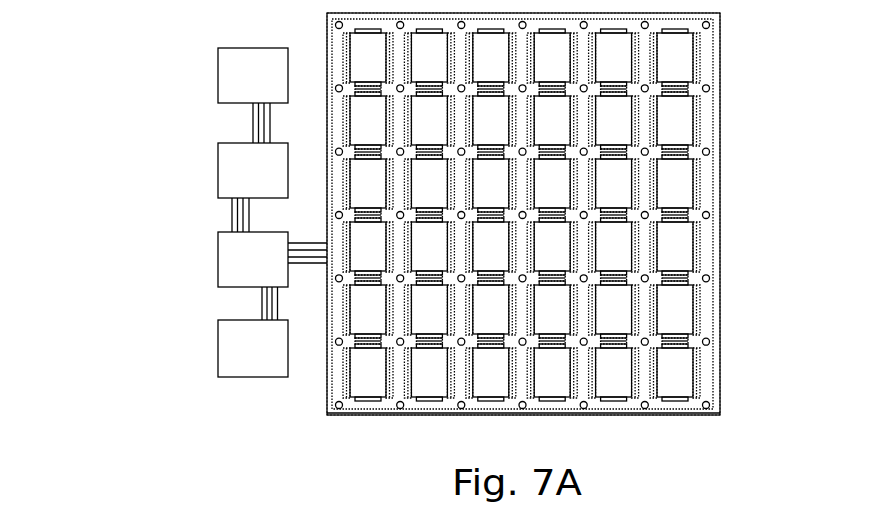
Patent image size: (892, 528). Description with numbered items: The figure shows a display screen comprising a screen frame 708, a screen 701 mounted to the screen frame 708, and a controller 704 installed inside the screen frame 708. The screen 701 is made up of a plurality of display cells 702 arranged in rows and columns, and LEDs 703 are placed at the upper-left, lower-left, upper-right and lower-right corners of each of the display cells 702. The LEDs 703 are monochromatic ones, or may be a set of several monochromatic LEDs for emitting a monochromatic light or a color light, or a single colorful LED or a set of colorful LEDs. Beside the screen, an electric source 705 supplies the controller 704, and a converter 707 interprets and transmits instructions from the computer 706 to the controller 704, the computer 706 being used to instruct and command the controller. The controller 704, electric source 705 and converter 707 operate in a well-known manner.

The screen 701 is at (700, 388).
The display cell 702 is at (678, 302).
The LED 703 is at (648, 213).
The controller 704 is at (230, 255).
The electric source 705 is at (230, 345).
The computer 706 is at (230, 74).
The converter 707 is at (230, 162).
The screen frame 708 is at (707, 23).